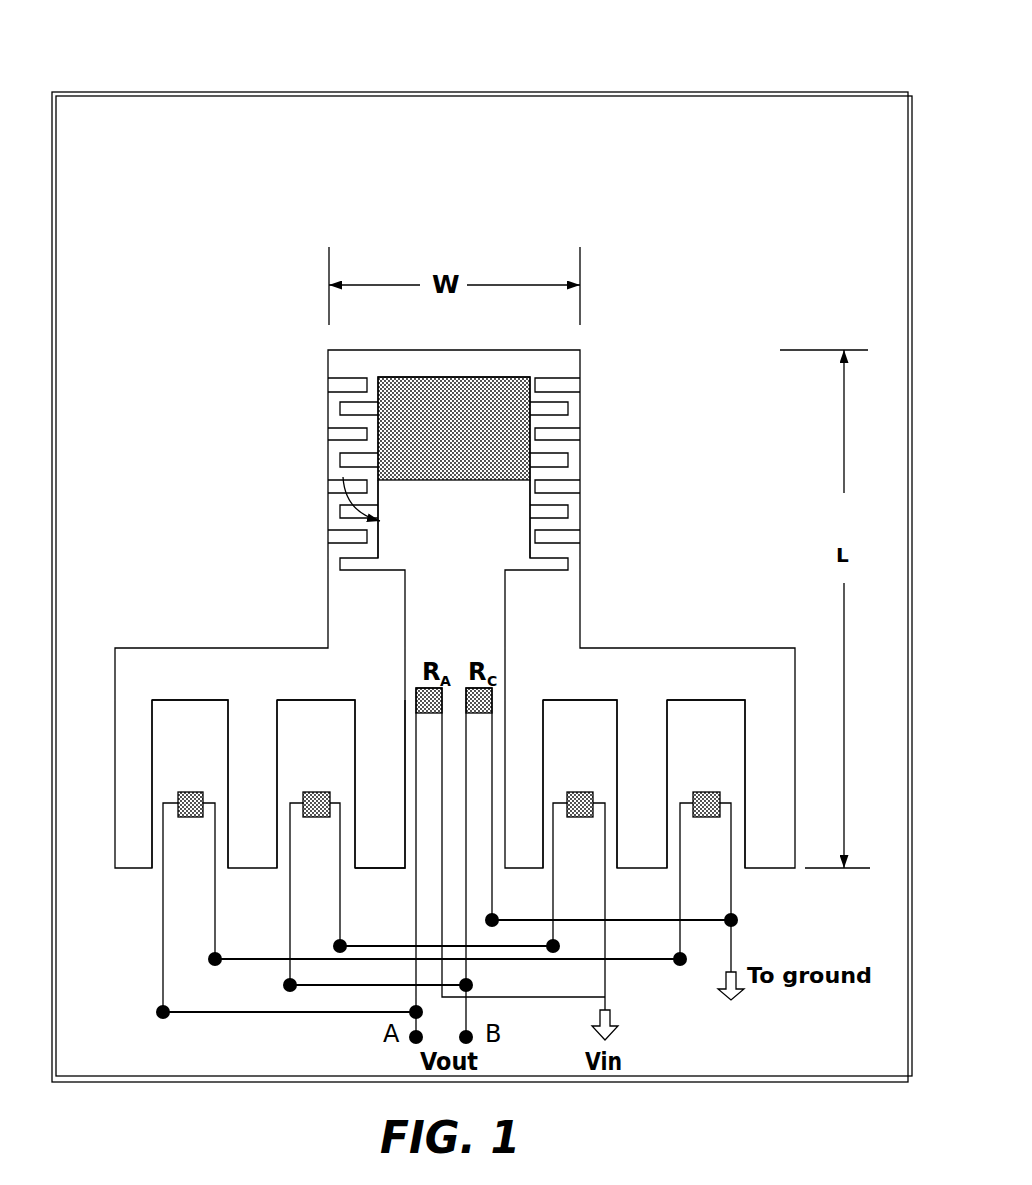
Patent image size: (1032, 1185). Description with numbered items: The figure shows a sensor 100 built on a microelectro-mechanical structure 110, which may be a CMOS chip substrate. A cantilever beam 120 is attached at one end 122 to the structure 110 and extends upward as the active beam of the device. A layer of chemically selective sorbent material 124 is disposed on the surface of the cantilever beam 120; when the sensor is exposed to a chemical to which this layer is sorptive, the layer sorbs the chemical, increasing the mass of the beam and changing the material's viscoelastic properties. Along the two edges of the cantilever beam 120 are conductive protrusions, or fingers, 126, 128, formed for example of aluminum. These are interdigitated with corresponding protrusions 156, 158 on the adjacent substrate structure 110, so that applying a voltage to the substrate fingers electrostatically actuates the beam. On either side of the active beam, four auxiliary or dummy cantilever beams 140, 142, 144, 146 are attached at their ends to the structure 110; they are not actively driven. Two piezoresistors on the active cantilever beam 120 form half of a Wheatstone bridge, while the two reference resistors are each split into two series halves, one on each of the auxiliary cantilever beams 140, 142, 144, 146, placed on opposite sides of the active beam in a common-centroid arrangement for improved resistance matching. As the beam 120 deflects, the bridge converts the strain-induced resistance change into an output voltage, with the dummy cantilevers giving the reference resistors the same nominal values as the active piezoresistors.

The sensor 100 is at (683, 65).
The microelectro-mechanical (MEMs) structure 110 is at (262, 169).
The cantilever beam 120 is at (465, 508).
The end 122 is at (403, 873).
The layer of chemically selective sorbent material 124 is at (465, 398).
The protrusions 126 is at (455, 602).
The protrusions 128 is at (550, 458).
The auxiliary cantilever beam 140 is at (198, 741).
The auxiliary cantilever beam 142 is at (337, 741).
The auxiliary cantilever beam 144 is at (607, 741).
The auxiliary cantilever beam 146 is at (728, 741).
The protrusions 156 is at (338, 442).
The protrusions 158 is at (564, 383).